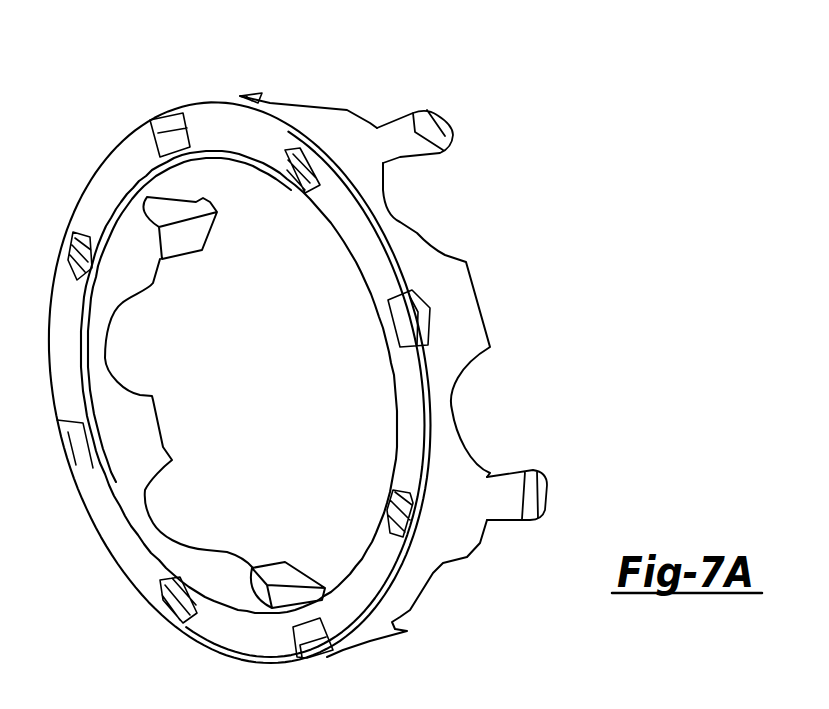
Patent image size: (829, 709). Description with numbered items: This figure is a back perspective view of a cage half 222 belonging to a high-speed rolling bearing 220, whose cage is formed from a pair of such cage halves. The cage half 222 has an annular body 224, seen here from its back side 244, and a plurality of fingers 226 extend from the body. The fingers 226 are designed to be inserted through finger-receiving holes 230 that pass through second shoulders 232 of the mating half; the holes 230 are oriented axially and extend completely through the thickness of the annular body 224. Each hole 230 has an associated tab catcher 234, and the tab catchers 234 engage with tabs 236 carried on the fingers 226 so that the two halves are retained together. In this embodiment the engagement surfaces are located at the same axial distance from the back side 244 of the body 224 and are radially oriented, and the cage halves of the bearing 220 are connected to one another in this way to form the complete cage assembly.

The high-speed rolling bearing 220 is at (431, 355).
The cage half 222 is at (291, 355).
The annular body 224 is at (128, 157).
The fingers 226 is at (432, 160).
The finger-receiving holes 230 is at (750, 708).
The second shoulders 232 is at (667, 708).
The tab catcher 234 is at (432, 310).
The tabs 236 is at (550, 500).
The back side 244 is at (222, 633).